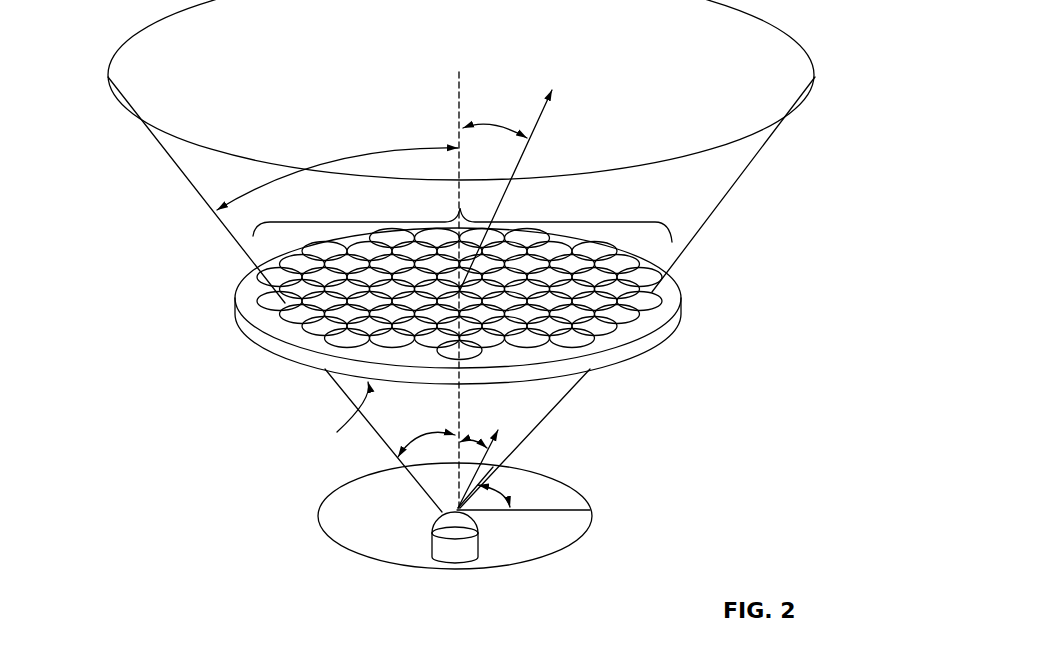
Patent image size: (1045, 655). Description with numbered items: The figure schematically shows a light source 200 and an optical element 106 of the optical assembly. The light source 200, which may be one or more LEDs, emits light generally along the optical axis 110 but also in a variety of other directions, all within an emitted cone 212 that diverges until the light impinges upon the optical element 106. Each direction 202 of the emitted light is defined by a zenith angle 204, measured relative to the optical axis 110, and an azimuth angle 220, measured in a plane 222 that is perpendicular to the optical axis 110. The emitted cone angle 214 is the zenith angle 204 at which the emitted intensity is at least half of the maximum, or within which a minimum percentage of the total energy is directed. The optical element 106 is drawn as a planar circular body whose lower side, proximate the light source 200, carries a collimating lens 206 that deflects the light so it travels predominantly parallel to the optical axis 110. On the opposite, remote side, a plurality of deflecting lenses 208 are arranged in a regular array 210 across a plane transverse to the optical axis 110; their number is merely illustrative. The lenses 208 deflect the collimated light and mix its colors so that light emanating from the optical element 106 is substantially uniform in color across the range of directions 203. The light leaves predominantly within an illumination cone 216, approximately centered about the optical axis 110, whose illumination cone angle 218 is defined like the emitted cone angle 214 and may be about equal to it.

The optical element 106 is at (670, 323).
The optical axis 110 is at (463, 90).
The light source 200 is at (468, 548).
The direction of the emitted light 202 is at (493, 443).
The direction of the light emanating from the optical element 203 is at (538, 122).
The zenith angle 204 is at (510, 128).
The collimating lens 206 is at (330, 415).
The deflecting lenses 208 is at (568, 258).
The array 210 is at (460, 208).
The emitted cone 212 is at (386, 443).
The emitted cone angle 214 is at (400, 441).
The illumination cone 216 is at (178, 168).
The illumination cone angle 218 is at (253, 195).
The azimuth angle 220 is at (503, 490).
The plane 222 is at (567, 548).